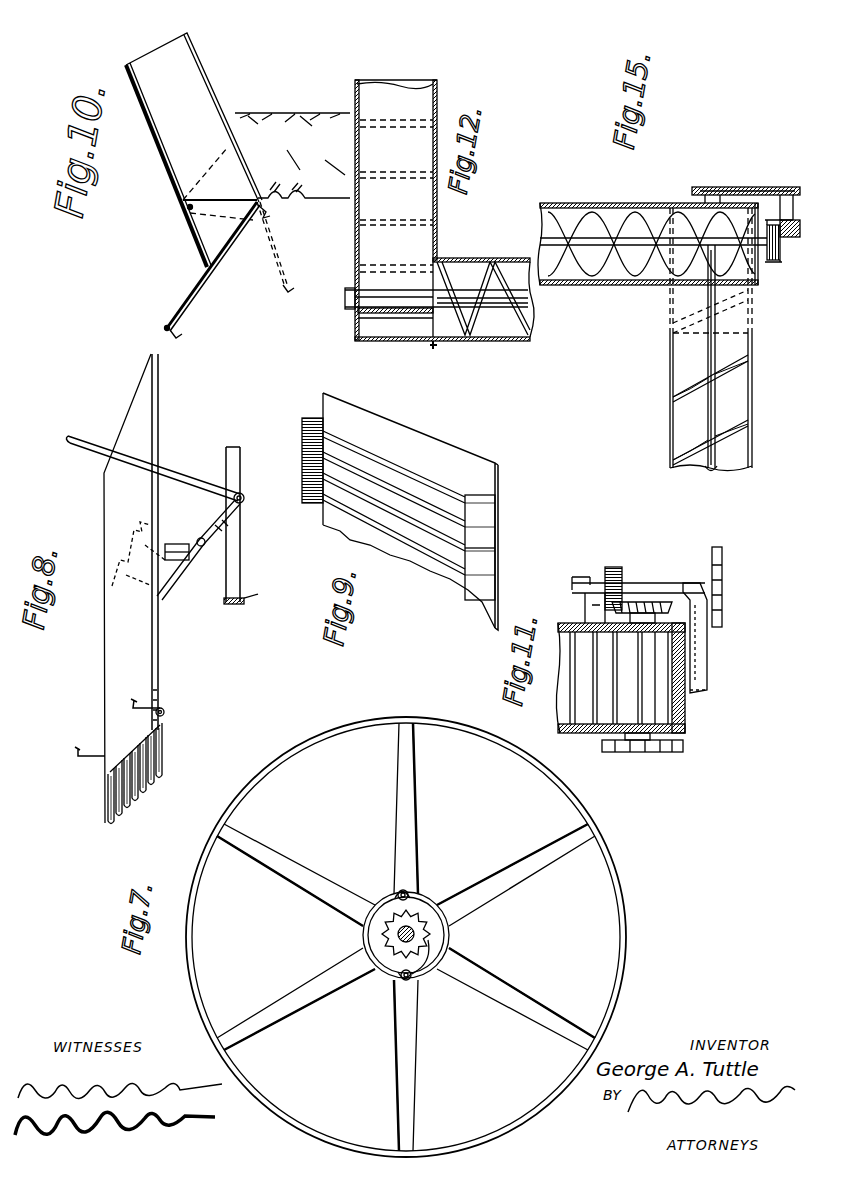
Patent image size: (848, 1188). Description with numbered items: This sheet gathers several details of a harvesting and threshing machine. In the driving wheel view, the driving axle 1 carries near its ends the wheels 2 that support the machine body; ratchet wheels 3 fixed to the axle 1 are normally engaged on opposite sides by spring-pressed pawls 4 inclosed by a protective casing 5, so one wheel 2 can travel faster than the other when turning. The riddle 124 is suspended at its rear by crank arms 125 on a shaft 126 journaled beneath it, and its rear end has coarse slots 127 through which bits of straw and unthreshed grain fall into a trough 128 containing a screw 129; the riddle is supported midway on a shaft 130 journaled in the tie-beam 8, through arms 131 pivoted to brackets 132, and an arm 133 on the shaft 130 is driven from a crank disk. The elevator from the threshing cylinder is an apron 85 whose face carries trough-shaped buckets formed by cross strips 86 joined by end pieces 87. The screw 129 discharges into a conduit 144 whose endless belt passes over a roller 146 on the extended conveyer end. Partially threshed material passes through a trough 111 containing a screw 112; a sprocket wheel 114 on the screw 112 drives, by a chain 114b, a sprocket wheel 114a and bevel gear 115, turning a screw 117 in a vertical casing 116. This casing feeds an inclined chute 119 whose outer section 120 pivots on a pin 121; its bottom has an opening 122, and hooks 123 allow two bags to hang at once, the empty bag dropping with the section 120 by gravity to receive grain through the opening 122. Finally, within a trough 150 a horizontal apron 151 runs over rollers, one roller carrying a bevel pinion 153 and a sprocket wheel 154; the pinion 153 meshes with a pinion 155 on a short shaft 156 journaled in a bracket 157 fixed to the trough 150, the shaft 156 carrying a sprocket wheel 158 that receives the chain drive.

In FIG. 7, the driving axle 1 is at (395, 905).
In FIG. 7, the wheels 2 is at (341, 722).
In FIG. 7, the ratchet wheels 3 is at (428, 955).
In FIG. 7, the spring-pressed pawls 4 is at (388, 978).
In FIG. 7, the protective casing 5 is at (452, 928).
In FIG. 8, the horizontal tie-beam 8 is at (244, 600).
In FIG. 9, the apron 85 is at (427, 453).
In FIG. 9, the cross strips 86 is at (374, 460).
In FIG. 9, the end pieces 87 is at (305, 440).
In FIG. 15, the trough 111 is at (670, 412).
In FIG. 15, the screw 112 is at (716, 420).
In FIG. 15, the sprocket wheel 114 is at (697, 187).
In FIG. 15, the sprocket wheel 114a is at (790, 187).
In FIG. 15, the chain 114b is at (745, 187).
In FIG. 15, the bevel gear 115 is at (772, 262).
In FIG. 15, the vertical casing 116 is at (580, 203).
In FIG. 15, the screw 117 is at (640, 238).
In FIG. 10, the inclined chute 119 is at (128, 72).
In FIG. 10, the section 120 is at (218, 194).
In FIG. 10, the pin 121 is at (183, 200).
In FIG. 10, the opening 122 is at (187, 298).
In FIG. 10, the hooks 123 is at (225, 115).
In FIG. 8, the riddle 124 is at (108, 615).
In FIG. 8, the crank arms 125 is at (79, 748).
In FIG. 8, the shaft 126 is at (165, 711).
In FIG. 8, the slots 127 is at (146, 795).
In FIG. 12, the trough 128 is at (512, 258).
In FIG. 12, the screw 129 is at (470, 290).
In FIG. 8, the shaft 130 is at (182, 578).
In FIG. 8, the arms 131 is at (177, 544).
In FIG. 8, the brackets 132 is at (130, 522).
In FIG. 8, the arm 133 is at (177, 472).
In FIG. 12, the conduit 144 is at (357, 100).
In FIG. 12, the roller 146 is at (357, 268).
In FIG. 11, the trough 150 is at (575, 733).
In FIG. 11, the horizontal apron 151 is at (619, 678).
In FIG. 11, the bevel pinion 153 is at (655, 602).
In FIG. 11, the sprocket wheel 154 is at (622, 752).
In FIG. 11, the pinion 155 is at (610, 567).
In FIG. 11, the short shaft 156 is at (640, 583).
In FIG. 11, the bracket 157 is at (700, 630).
In FIG. 11, the sprocket wheel 158 is at (716, 547).